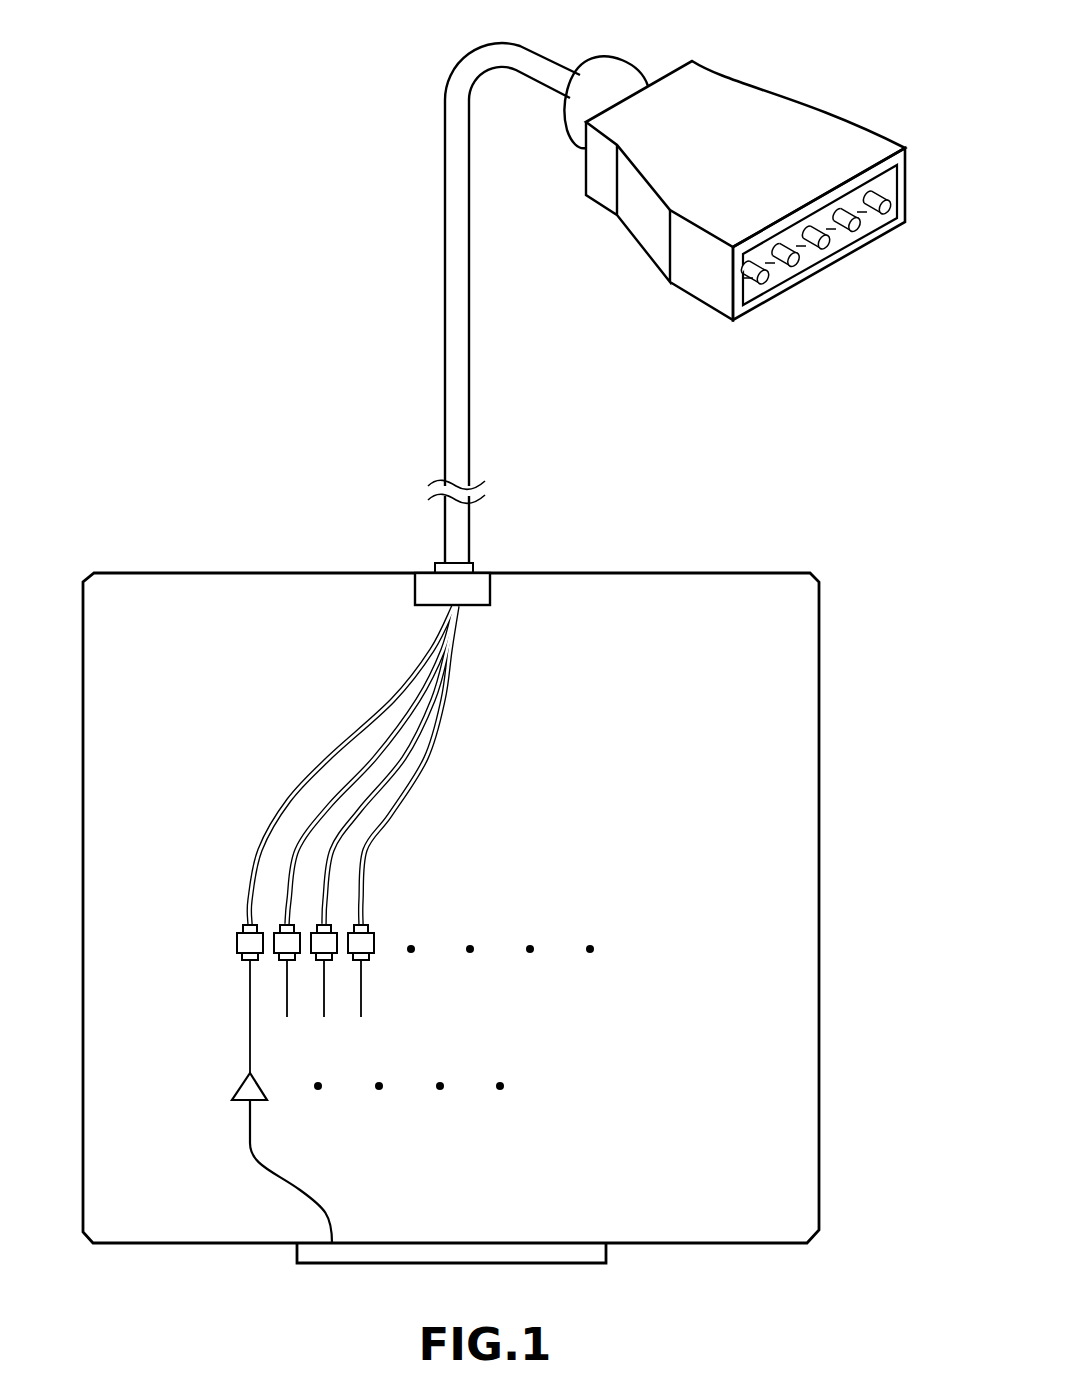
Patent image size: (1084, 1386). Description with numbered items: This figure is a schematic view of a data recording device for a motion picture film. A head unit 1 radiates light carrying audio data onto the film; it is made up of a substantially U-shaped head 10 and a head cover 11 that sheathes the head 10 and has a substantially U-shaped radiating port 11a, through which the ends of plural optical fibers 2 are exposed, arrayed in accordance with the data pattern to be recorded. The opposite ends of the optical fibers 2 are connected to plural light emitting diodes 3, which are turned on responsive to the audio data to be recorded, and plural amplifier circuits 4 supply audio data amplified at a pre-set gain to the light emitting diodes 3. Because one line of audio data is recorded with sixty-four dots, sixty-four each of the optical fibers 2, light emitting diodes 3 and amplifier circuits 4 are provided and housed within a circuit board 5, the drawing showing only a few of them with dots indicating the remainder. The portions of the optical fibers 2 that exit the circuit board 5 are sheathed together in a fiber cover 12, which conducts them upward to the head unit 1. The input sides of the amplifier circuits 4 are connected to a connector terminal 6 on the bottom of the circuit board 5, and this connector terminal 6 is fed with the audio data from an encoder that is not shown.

The head unit 1 is at (744, 168).
The optical fibers 2 is at (855, 226).
The light emitting diodes 3 is at (239, 939).
The amplifier circuits 4 is at (242, 1085).
The circuit board 5 is at (638, 587).
The connector terminal 6 is at (553, 1255).
The head 10 is at (907, 175).
The head cover 11 is at (753, 103).
The radiating port 11a is at (808, 253).
The fiber cover 12 is at (445, 326).